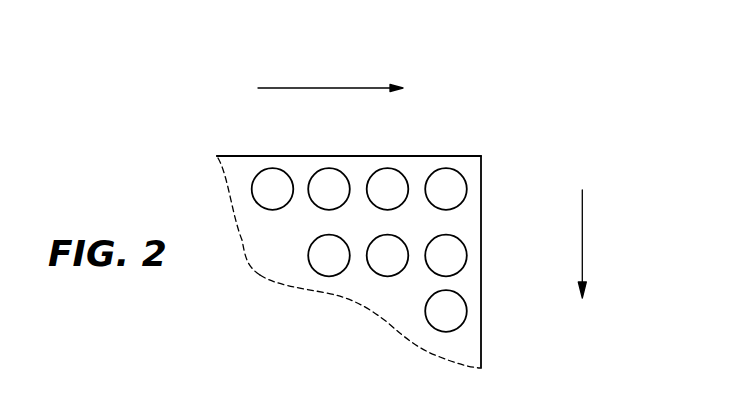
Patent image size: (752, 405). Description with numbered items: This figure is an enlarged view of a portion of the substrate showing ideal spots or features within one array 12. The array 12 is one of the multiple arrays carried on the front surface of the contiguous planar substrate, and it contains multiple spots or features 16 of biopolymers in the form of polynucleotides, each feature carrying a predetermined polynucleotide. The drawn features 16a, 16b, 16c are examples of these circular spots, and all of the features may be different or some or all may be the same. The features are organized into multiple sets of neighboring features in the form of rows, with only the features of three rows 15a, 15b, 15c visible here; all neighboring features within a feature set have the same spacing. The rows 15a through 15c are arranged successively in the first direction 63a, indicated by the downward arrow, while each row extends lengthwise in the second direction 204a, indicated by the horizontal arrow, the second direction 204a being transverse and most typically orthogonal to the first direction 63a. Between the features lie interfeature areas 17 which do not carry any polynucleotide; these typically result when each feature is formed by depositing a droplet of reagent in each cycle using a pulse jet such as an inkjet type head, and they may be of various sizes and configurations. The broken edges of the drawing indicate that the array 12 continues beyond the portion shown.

The array 12 is at (470, 342).
The row 15a is at (470, 178).
The row 15b is at (283, 247).
The row 15c is at (412, 312).
The feature 16 is at (465, 303).
The feature 16a is at (323, 262).
The feature 16b is at (383, 262).
The feature 16c is at (453, 248).
The interfeature area 17 is at (415, 175).
The second direction 204a is at (340, 88).
The first direction 63a is at (582, 252).